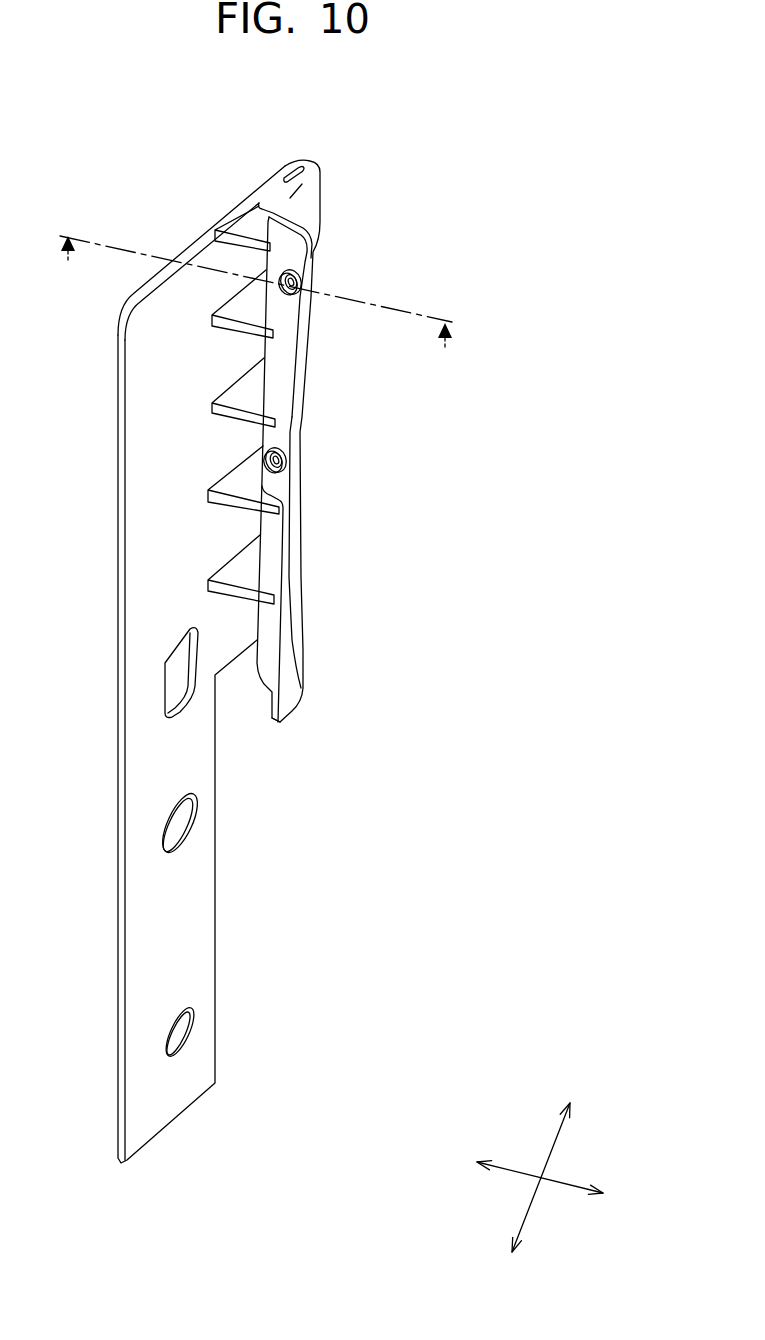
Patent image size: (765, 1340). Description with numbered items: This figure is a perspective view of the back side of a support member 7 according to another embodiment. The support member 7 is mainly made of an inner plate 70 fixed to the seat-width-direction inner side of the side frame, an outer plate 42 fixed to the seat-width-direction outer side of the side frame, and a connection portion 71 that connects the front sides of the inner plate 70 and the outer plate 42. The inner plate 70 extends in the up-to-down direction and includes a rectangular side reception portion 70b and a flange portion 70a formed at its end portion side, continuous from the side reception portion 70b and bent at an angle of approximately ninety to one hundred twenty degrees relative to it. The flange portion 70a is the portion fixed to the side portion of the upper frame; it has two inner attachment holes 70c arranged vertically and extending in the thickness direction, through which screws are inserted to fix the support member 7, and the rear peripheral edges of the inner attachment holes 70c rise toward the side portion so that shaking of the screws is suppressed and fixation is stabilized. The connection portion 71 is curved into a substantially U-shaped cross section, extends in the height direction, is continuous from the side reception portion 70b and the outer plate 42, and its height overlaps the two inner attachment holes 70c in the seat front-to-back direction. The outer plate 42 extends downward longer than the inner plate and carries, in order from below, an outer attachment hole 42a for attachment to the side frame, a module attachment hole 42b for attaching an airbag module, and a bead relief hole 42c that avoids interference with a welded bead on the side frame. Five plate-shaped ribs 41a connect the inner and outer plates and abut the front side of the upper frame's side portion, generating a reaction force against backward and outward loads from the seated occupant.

The support member 7 is at (452, 146).
The outer plate 42 is at (172, 1092).
The outer attachment hole 42a is at (168, 1025).
The module attachment hole 42b is at (163, 816).
The bead relief hole 42c is at (165, 687).
The plate-shaped ribs 41a is at (248, 223).
The inner plate 70 is at (414, 168).
The flange portion 70a is at (320, 240).
The side reception portion 70b is at (306, 201).
The inner attachment holes 70c is at (298, 270).
The connection portion 71 is at (305, 160).